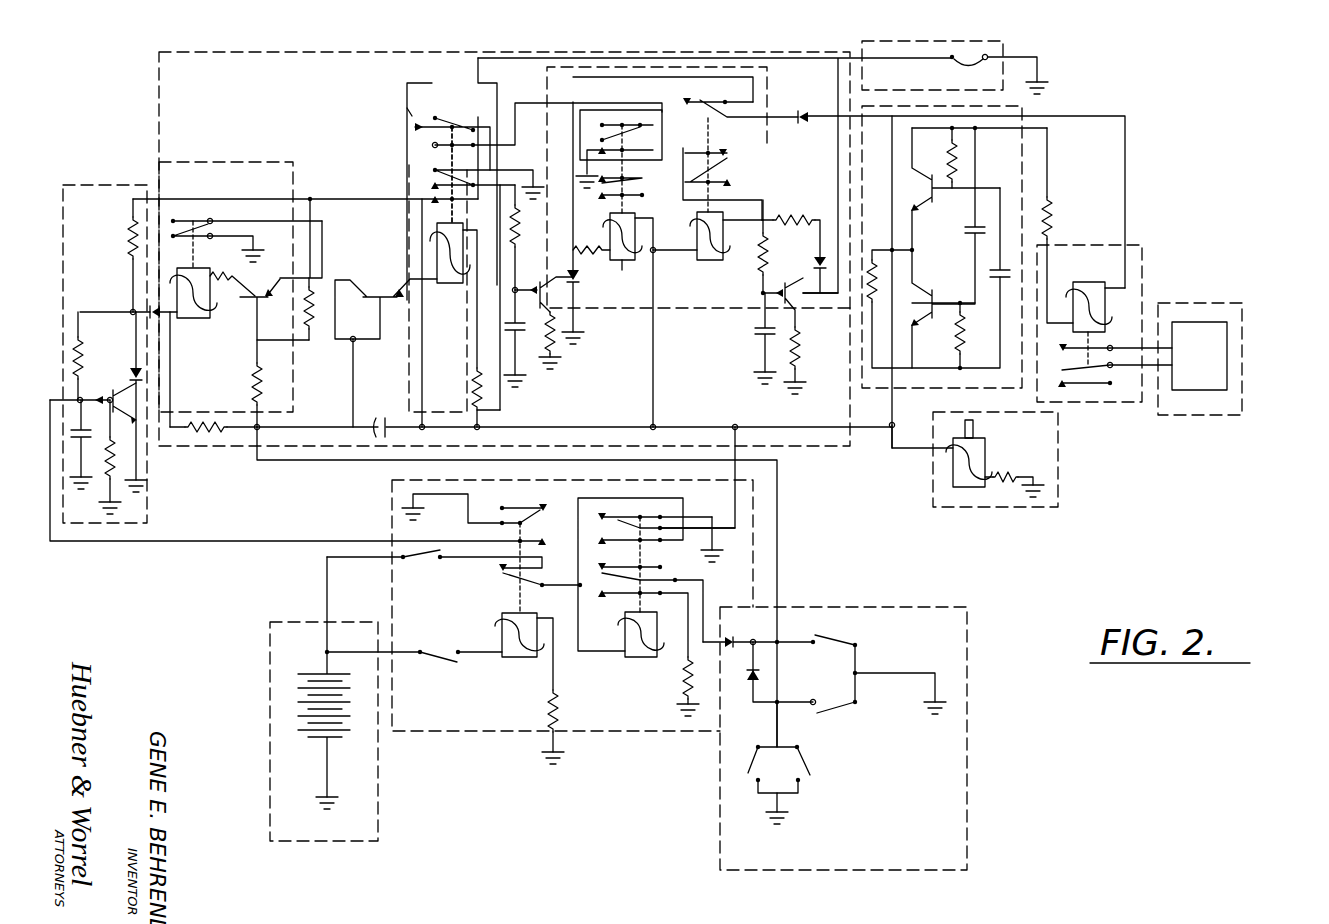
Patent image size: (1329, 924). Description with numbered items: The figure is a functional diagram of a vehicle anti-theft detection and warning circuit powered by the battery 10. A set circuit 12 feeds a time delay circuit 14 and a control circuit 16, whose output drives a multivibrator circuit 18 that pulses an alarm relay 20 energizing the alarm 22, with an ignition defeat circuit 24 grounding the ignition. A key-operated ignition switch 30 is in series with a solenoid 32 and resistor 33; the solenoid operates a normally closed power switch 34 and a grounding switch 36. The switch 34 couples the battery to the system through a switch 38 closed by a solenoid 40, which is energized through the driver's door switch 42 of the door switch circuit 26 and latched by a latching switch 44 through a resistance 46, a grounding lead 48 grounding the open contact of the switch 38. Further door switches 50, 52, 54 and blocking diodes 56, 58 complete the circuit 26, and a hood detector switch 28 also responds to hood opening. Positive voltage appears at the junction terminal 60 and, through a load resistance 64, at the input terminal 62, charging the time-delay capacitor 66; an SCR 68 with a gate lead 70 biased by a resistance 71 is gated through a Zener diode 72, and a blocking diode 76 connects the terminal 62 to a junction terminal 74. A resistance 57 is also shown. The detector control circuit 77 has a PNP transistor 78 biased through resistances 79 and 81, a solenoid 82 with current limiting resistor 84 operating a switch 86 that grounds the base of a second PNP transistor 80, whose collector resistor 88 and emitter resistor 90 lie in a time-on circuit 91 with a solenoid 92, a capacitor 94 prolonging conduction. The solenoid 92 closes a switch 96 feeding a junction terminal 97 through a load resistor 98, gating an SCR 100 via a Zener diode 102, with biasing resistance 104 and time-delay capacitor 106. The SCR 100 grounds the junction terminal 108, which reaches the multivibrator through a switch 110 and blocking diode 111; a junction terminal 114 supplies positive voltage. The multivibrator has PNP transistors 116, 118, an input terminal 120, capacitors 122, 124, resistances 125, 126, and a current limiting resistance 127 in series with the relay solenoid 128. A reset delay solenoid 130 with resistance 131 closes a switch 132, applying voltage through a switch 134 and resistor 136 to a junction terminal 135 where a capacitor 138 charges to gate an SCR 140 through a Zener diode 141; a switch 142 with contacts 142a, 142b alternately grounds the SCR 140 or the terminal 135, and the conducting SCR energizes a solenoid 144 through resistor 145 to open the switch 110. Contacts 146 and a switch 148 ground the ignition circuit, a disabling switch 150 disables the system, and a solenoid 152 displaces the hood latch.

The battery 10 is at (381, 804).
The set circuit 12 is at (499, 718).
The time delay circuit 14 is at (100, 186).
The control circuit 16 is at (172, 68).
The multivibrator circuit 18 is at (1024, 149).
The alarm relay 20 is at (1143, 262).
The alarm device 22 is at (1244, 396).
The ignition defeat circuit 24 is at (603, 111).
The door switch circuit 26 is at (962, 780).
The hood detector switch 28 is at (1004, 46).
The ignition switch 30 is at (437, 664).
The solenoid 32 is at (522, 660).
The current limiting resistor 33 is at (560, 704).
The power switch 34 is at (500, 579).
The grounding switch 36 is at (545, 530).
The switch 38 is at (615, 531).
The solenoid 40 is at (627, 658).
The door switch 42 is at (843, 640).
The latching switch 44 is at (620, 587).
The resistance 46 is at (682, 673).
The circuit grounding lead 48 is at (696, 518).
The door switch 50 is at (834, 710).
The door switch 52 is at (815, 768).
The door switch 54 is at (745, 771).
The blocking diode 56 is at (730, 635).
The resistor 57 is at (72, 348).
The blocking diode 58 is at (748, 681).
The positive voltage junction terminal 60 is at (735, 424).
The input junction terminal 62 is at (130, 311).
The load resistance 64 is at (126, 229).
The time-delay capacitor 66 is at (95, 544).
The SCR 68 is at (133, 372).
The gate lead 70 is at (147, 443).
The resistance 71 is at (117, 477).
The Zener diode 72 is at (143, 467).
The junction terminal 74 is at (171, 314).
The blocking diode 76 is at (152, 317).
The detector control circuit 77 is at (225, 162).
The PNP transistor 78 is at (258, 302).
The resistance 79 is at (273, 378).
The PNP transistor 80 is at (381, 290).
The biasing resistor 81 is at (312, 338).
The solenoid 82 is at (176, 289).
The current limiting resistor 84 is at (222, 288).
The switch 86 is at (172, 220).
The current limiting resistor 88 is at (207, 437).
The current limiting resistor 90 is at (471, 394).
The time-on circuit 91 is at (405, 112).
The solenoid 92 is at (431, 250).
The capacitor 94 is at (377, 421).
The switch 96 is at (430, 182).
The junction terminal 97 is at (511, 292).
The load resistor 98 is at (530, 235).
The SCR 100 is at (579, 289).
The Zener diode 102 is at (536, 304).
The resistance 104 is at (561, 322).
The time-delay capacitor 106 is at (506, 328).
The junction terminal 108 is at (573, 248).
The switch 110 is at (720, 119).
The blocking diode 111 is at (823, 95).
The junction terminal 114 is at (892, 428).
The PNP transistor 116 is at (935, 300).
The PNP transistor 118 is at (928, 185).
The input terminal 120 is at (876, 60).
The capacitor 122 is at (975, 226).
The capacitor 124 is at (998, 268).
The resistance 125 is at (955, 158).
The resistance 126 is at (957, 342).
The current limiting resistance 127 is at (1055, 216).
The solenoid 128 is at (1108, 300).
The solenoid 130 is at (625, 264).
The current limiting resistance 131 is at (772, 74).
The switch 132 is at (612, 236).
The switch 134 is at (735, 156).
The junction terminal 135 is at (760, 298).
The current limiting resistor 136 is at (762, 258).
The capacitor 138 is at (758, 331).
The SCR 140 is at (790, 219).
The Zener diode 141 is at (776, 276).
The switch 142 is at (412, 128).
The contact 142a is at (452, 154).
The contact 142b is at (432, 146).
The solenoid 144 is at (716, 261).
The current limiting resistor 145 is at (792, 210).
The contacts 146 is at (648, 121).
The switch 148 is at (648, 140).
The disabling switch 150 is at (440, 560).
The solenoid 152 is at (1060, 497).